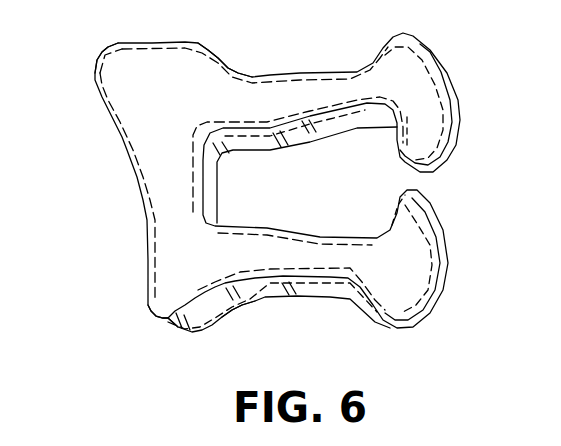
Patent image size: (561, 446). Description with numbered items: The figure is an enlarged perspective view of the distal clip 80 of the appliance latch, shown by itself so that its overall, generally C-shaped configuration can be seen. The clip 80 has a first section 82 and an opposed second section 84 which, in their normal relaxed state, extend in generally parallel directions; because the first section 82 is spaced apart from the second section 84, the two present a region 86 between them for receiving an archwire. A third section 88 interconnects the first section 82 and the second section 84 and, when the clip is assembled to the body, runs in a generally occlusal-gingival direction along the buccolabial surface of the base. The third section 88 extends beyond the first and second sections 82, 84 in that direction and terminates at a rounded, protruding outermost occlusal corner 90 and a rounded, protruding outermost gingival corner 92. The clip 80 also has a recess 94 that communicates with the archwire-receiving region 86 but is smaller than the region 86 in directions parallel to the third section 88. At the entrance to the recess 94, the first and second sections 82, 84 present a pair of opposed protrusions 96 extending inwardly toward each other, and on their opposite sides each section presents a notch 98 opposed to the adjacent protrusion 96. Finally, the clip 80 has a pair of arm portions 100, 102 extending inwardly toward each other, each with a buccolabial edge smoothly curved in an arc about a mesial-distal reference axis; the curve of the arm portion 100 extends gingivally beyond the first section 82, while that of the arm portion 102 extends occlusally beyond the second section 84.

The distal clip 80 is at (323, 304).
The first section 82 is at (300, 93).
The second section 84 is at (300, 293).
The region 86 is at (340, 236).
The third section 88 is at (158, 187).
The outermost occlusal corner 90 is at (163, 320).
The outermost gingival corner 92 is at (100, 55).
The recess 94 is at (237, 152).
The protrusions 96 is at (290, 145).
The notch 98 is at (251, 74).
The arm portion 100 is at (427, 80).
The arm portion 102 is at (437, 279).